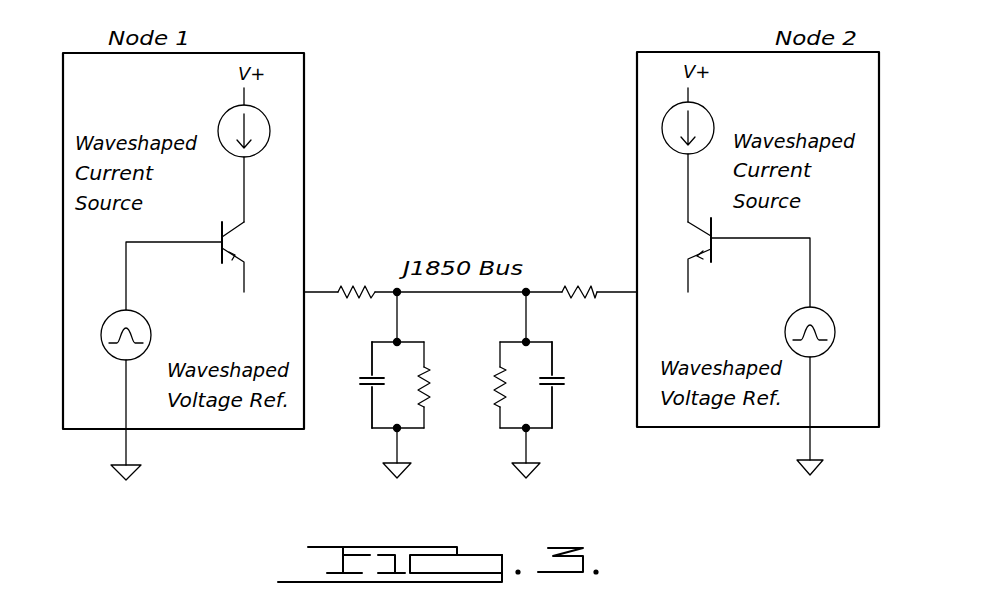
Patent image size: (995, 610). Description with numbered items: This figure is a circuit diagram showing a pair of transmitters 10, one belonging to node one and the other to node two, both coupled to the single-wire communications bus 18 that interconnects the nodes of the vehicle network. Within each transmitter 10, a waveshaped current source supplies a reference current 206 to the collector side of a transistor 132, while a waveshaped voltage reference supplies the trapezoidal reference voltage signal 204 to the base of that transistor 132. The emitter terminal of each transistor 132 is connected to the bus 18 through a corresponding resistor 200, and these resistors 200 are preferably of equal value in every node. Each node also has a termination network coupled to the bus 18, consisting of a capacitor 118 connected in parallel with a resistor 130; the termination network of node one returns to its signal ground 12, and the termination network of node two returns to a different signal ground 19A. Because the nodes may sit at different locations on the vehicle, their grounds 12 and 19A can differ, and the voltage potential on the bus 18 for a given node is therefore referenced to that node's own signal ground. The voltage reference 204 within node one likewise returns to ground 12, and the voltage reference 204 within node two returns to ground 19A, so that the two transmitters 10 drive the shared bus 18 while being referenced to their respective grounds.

The transceiver 10 is at (305, 72).
The signal ground 12 is at (135, 470).
The communications bus 18 is at (450, 292).
The signal ground 19A is at (535, 468).
The capacitor 118 is at (360, 382).
The resistor 130 is at (497, 390).
The transistor 132 is at (234, 242).
The resistor 200 is at (352, 285).
The reference voltage signal 204 is at (148, 327).
The reference current 206 is at (223, 127).